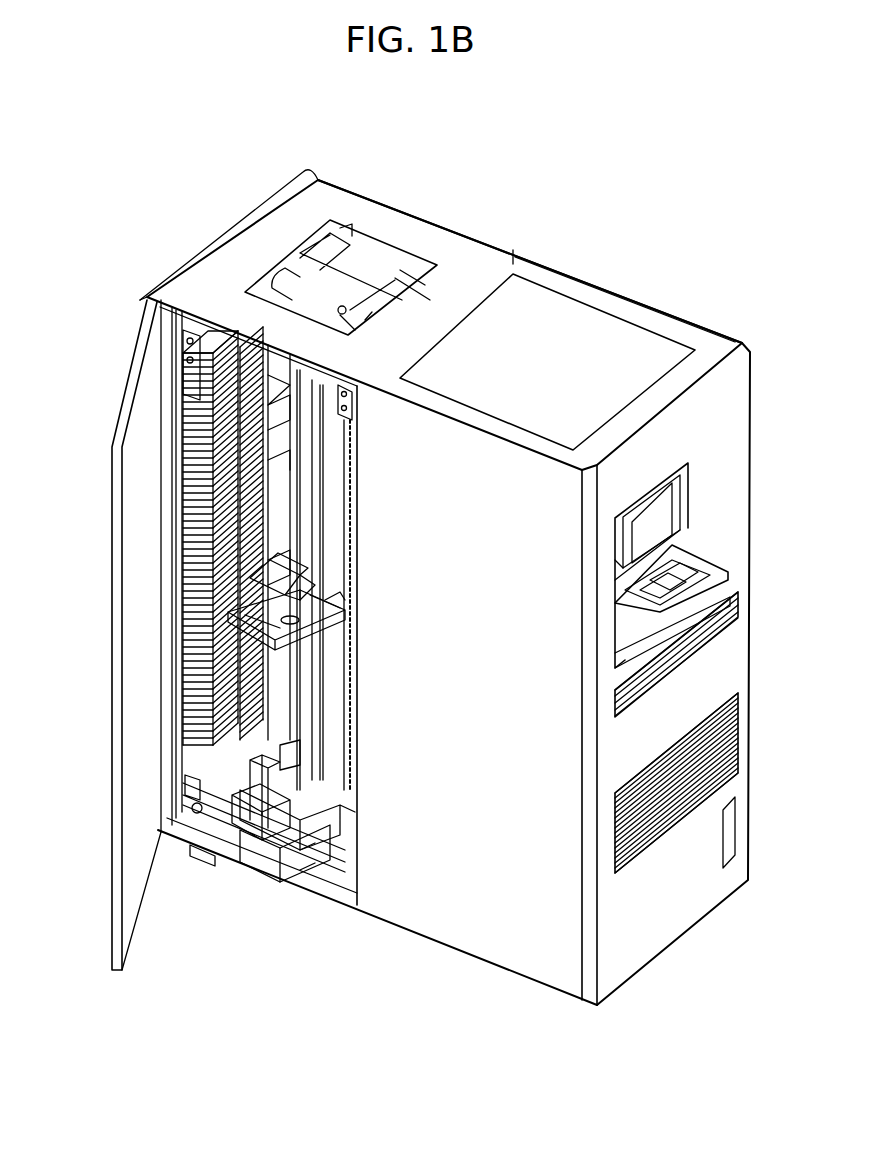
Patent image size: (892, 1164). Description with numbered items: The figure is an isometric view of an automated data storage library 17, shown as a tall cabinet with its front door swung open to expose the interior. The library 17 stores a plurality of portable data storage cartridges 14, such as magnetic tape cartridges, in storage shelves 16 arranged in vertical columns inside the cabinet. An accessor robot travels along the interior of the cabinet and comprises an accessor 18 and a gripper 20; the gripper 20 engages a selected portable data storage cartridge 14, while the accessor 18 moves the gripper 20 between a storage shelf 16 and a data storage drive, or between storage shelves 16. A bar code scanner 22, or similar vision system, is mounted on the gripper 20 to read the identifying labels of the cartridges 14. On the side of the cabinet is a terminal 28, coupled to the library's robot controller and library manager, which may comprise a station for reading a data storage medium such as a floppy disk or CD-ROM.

The portable data storage cartridges 14 is at (192, 423).
The storage shelves 16 is at (142, 488).
The automated data storage library 17 is at (492, 258).
The accessor 18 is at (277, 793).
The gripper 20 is at (323, 625).
The bar code scanner 22 is at (282, 582).
The terminal 28 is at (727, 573).